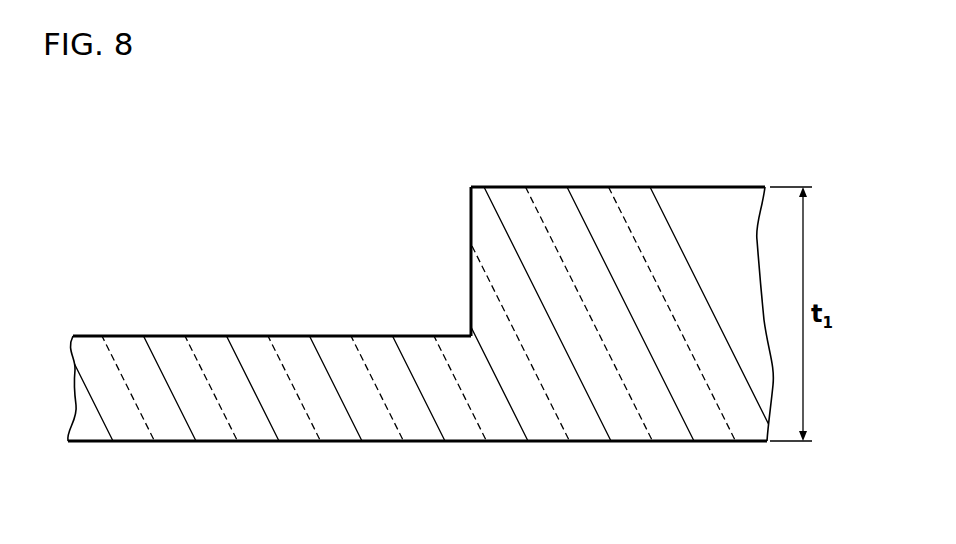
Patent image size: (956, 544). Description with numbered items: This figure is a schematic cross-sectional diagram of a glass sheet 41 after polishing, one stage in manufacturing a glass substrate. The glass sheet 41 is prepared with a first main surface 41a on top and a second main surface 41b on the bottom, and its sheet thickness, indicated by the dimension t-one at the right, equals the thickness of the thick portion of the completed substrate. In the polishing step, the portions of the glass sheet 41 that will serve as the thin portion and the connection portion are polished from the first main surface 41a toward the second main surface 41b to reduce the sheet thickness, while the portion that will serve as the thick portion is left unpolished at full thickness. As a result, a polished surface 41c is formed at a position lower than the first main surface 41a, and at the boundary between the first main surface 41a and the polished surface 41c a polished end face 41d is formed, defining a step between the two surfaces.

The glass sheet 41 is at (678, 222).
The first main surface 41a is at (615, 187).
The second main surface 41b is at (683, 441).
The polished surface 41c is at (183, 336).
The polished end face 41d is at (471, 247).